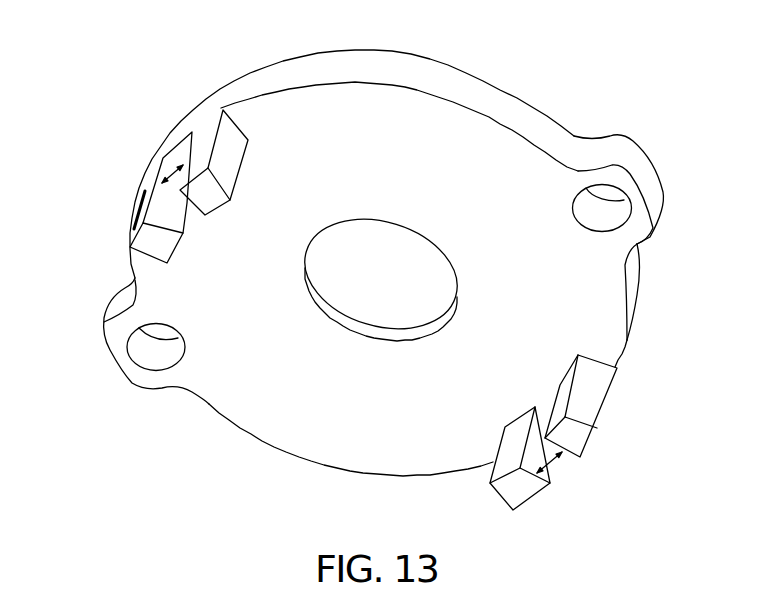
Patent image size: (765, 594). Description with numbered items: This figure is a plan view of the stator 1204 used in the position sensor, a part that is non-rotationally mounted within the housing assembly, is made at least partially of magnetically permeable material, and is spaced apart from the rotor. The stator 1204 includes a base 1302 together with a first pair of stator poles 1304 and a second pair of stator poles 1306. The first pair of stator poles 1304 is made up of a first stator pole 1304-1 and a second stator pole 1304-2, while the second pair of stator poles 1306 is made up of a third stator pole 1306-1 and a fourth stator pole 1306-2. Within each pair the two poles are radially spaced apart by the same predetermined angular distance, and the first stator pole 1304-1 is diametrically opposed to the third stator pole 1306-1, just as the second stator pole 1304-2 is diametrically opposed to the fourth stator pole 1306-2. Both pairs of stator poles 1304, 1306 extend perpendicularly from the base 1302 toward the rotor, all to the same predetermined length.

The stator 1204 is at (372, 264).
The base 1302 is at (345, 58).
The first pair of stator poles 1304 is at (187, 176).
The first stator pole 1304-1 is at (183, 235).
The second stator pole 1304-2 is at (243, 167).
The second pair of stator poles 1306 is at (560, 438).
The third stator pole 1306-1 is at (560, 393).
The fourth stator pole 1306-2 is at (508, 443).